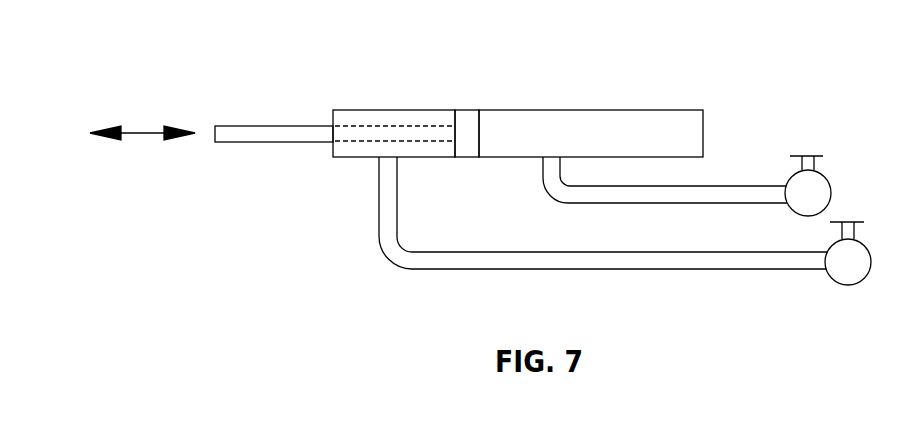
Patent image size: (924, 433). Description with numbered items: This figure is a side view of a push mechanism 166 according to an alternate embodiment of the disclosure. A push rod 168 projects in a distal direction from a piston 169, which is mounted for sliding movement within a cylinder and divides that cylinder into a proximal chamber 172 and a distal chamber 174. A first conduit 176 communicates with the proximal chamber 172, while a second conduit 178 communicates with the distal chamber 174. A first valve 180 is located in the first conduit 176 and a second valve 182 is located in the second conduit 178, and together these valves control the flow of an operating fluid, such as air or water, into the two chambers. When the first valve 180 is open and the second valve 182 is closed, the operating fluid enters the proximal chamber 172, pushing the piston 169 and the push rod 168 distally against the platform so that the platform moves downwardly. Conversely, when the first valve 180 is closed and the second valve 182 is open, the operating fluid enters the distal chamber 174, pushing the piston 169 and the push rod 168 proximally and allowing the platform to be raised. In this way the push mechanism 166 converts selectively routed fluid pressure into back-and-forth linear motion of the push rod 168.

The push mechanism 166 is at (518, 85).
The push rod 168 is at (266, 129).
The piston 169 is at (468, 113).
The proximal chamber 172 is at (612, 122).
The distal chamber 174 is at (368, 113).
The first conduit 176 is at (740, 190).
The second conduit 178 is at (427, 263).
The first valve 180 is at (828, 180).
The second valve 182 is at (852, 273).